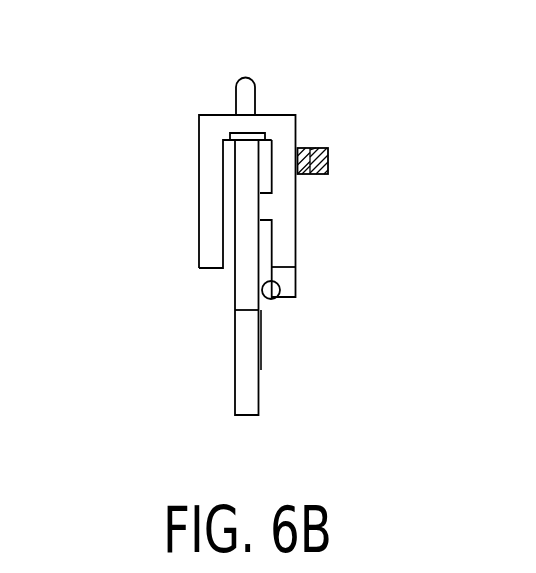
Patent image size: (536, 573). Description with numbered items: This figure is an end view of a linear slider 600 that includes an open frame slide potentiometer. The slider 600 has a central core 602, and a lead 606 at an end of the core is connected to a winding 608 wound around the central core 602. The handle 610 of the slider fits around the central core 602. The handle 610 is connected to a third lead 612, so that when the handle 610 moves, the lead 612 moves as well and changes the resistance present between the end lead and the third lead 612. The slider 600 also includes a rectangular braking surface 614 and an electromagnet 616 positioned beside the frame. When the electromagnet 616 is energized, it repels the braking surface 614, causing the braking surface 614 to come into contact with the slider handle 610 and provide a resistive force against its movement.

The linear slider 600 is at (133, 84).
The central core 602 is at (233, 238).
The lead 606 is at (247, 392).
The winding 608 is at (271, 299).
The handle 610 is at (244, 77).
The third lead 612 is at (288, 283).
The rectangular braking surface 614 is at (305, 147).
The electromagnet 616 is at (325, 147).